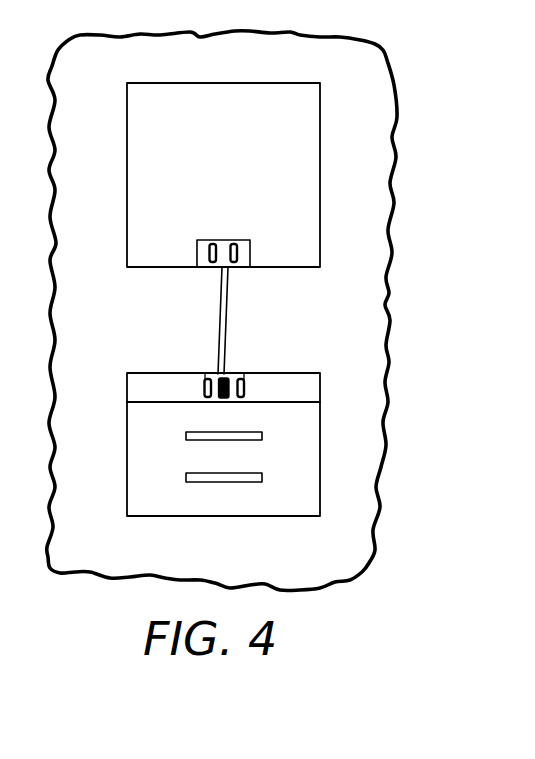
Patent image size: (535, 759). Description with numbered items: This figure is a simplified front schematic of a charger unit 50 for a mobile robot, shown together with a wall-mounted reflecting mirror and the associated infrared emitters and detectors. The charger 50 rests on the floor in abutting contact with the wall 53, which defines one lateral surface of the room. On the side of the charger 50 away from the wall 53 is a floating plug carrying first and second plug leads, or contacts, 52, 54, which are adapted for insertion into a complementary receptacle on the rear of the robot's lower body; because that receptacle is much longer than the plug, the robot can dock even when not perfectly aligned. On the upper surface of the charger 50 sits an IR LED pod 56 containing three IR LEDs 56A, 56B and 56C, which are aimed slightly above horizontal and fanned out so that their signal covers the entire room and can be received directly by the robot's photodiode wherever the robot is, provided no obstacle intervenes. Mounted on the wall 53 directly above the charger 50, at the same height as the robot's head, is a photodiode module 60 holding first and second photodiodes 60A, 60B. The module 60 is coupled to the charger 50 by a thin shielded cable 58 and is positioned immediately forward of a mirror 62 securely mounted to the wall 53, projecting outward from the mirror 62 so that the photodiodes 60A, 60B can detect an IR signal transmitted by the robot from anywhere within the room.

The charger unit 50 is at (322, 494).
The first plug lead 52 is at (211, 473).
The wall 53 is at (108, 146).
The second plug lead 54 is at (240, 432).
The IR LED pod 56 is at (228, 369).
The IR LED 56A is at (204, 388).
The IR LED 56B is at (222, 384).
The IR LED 56C is at (245, 388).
The thin shielded cable 58 is at (221, 314).
The photodiode module 60 is at (226, 236).
The first photodiode 60A is at (212, 252).
The second photodiode 60B is at (236, 252).
The mirror 62 is at (211, 138).